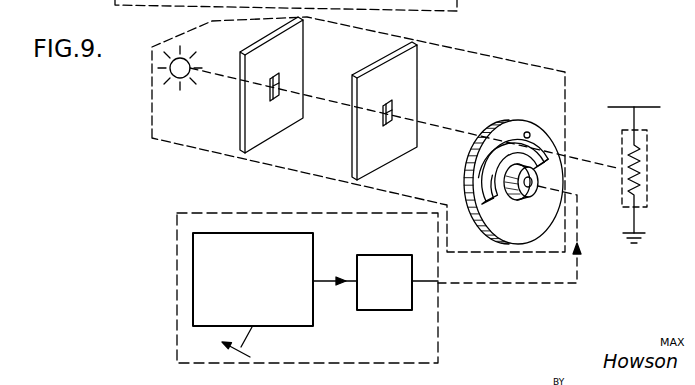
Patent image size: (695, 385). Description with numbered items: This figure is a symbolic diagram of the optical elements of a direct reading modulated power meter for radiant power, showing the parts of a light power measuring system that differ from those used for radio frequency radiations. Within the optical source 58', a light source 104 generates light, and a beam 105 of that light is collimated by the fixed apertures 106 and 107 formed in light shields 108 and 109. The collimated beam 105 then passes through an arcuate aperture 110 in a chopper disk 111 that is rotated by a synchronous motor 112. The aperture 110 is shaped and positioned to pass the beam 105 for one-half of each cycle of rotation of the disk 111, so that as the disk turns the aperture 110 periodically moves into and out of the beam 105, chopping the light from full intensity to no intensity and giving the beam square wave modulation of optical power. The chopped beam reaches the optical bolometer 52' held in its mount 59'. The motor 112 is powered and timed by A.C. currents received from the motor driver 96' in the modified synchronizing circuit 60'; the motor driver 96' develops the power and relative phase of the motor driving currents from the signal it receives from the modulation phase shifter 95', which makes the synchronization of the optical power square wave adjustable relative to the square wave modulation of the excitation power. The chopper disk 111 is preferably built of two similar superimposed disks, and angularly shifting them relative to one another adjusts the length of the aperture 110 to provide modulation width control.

The optical source 58' is at (358, 134).
The light source 104 is at (177, 79).
The beam 105 is at (453, 126).
The fixed aperture 106 is at (275, 78).
The fixed aperture 107 is at (388, 104).
The light shield 108 is at (275, 123).
The light shield 109 is at (387, 155).
The arcuate aperture 110 is at (528, 133).
The chopper disk 111 is at (516, 226).
The synchronous motor 112 is at (530, 190).
The optical bolometer 52' is at (647, 175).
The mount 59' is at (655, 168).
The modified synchronizing circuit 60' is at (307, 270).
The modulation phase shifter 95' is at (255, 294).
The motor driver 96' is at (384, 300).